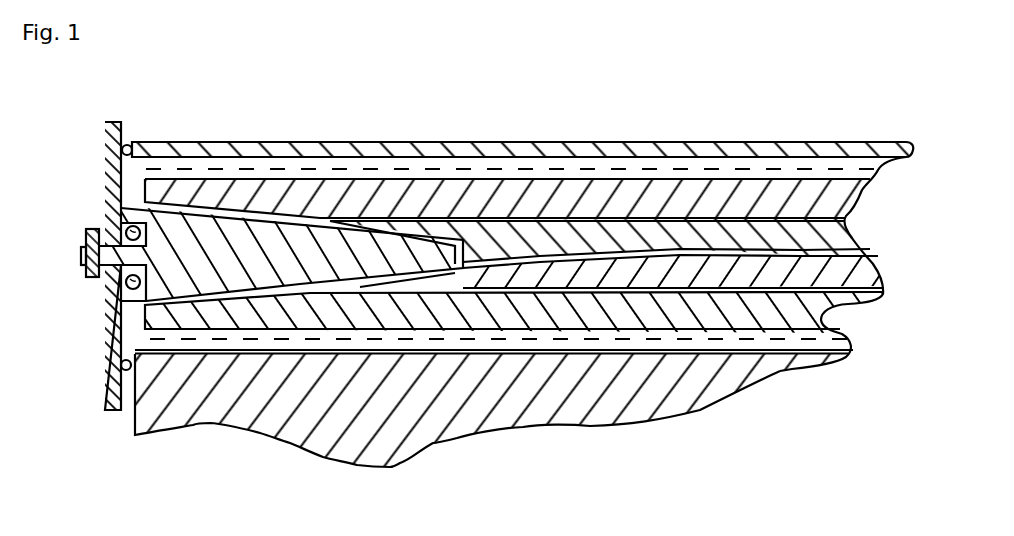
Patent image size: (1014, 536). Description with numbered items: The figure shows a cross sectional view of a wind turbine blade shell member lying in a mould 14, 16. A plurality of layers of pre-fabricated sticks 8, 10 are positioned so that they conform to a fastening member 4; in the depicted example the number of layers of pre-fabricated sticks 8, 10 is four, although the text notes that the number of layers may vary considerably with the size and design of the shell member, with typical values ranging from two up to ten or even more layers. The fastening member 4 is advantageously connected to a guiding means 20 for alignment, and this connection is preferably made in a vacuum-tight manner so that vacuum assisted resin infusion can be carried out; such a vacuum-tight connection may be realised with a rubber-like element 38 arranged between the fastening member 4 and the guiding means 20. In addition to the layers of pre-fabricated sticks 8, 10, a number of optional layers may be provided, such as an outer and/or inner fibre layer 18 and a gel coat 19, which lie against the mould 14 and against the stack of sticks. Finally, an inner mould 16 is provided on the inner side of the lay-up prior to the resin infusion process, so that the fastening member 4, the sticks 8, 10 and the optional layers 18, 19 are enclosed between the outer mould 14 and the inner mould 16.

The fastening member 4 is at (196, 278).
The pre-fabricated stick 8 is at (572, 238).
The pre-fabricated stick 10 is at (252, 188).
The mould 14 is at (386, 435).
The inner mould 16 is at (452, 155).
The fibre layer 18 is at (736, 162).
The gel coat 19 is at (222, 352).
The guiding means 20 is at (110, 122).
The rubber-like element 38 is at (105, 215).